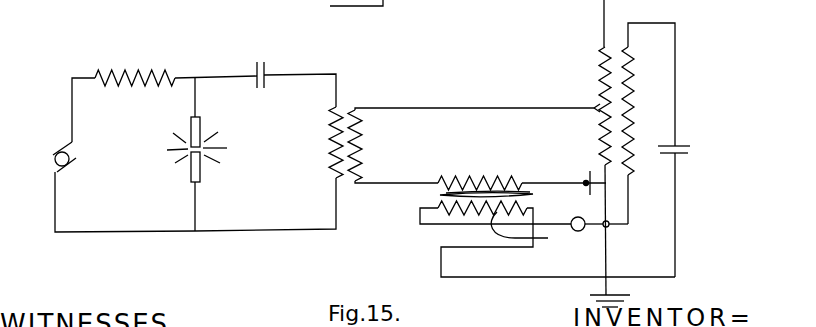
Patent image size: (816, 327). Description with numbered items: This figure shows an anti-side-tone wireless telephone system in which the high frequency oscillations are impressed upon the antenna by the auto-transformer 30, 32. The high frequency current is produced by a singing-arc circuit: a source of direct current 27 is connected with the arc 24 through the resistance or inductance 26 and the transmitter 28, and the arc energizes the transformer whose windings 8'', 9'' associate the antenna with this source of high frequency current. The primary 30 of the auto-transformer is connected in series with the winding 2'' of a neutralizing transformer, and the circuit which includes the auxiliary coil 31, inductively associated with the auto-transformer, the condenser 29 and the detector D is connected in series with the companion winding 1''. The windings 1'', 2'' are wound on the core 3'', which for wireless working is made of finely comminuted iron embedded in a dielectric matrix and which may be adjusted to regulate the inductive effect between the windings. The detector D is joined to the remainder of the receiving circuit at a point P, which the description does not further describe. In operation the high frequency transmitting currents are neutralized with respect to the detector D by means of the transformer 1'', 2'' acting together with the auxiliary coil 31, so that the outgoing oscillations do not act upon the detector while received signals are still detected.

The resistance or inductance 26 is at (149, 68).
The source of direct current 27 is at (79, 151).
The arc 24 is at (210, 154).
The primary winding 8'' is at (315, 142).
The secondary winding 9'' is at (371, 145).
The winding 2'' is at (480, 170).
The core 3'' is at (505, 201).
The winding 1'' is at (523, 236).
The detector D is at (584, 235).
The contact point P is at (609, 226).
The transmitter 28 is at (586, 181).
The primary 30 is at (600, 131).
The auxiliary coil 31 is at (640, 135).
The auto-transformer 32 is at (589, 106).
The condenser 29 is at (685, 163).